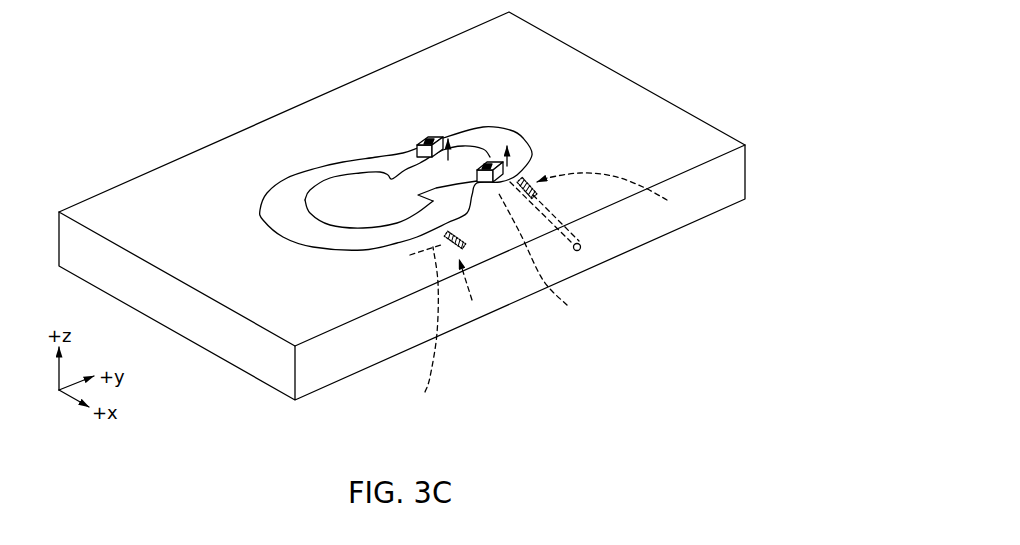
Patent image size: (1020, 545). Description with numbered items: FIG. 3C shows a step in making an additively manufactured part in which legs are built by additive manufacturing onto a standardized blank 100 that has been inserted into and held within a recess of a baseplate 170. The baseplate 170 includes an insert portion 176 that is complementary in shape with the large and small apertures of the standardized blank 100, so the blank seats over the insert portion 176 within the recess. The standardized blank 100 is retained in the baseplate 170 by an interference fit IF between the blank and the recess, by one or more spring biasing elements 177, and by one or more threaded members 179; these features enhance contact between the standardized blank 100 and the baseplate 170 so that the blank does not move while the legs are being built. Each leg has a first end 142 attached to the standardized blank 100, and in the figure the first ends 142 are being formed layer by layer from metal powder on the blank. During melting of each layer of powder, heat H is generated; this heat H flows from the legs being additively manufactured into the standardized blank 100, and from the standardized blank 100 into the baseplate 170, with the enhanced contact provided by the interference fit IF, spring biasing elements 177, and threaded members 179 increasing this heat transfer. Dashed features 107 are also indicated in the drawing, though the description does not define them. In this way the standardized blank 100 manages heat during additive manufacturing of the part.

The baseplate 170 is at (638, 73).
The standardized blank 100 is at (374, 154).
The insert portion 176 is at (360, 214).
The first end 142 is at (437, 133).
The conductive traces 107 is at (500, 295).
The spring biasing element 177 is at (472, 300).
The threaded member 179 is at (667, 200).
The interference fit IF is at (298, 188).
The heat H is at (417, 143).